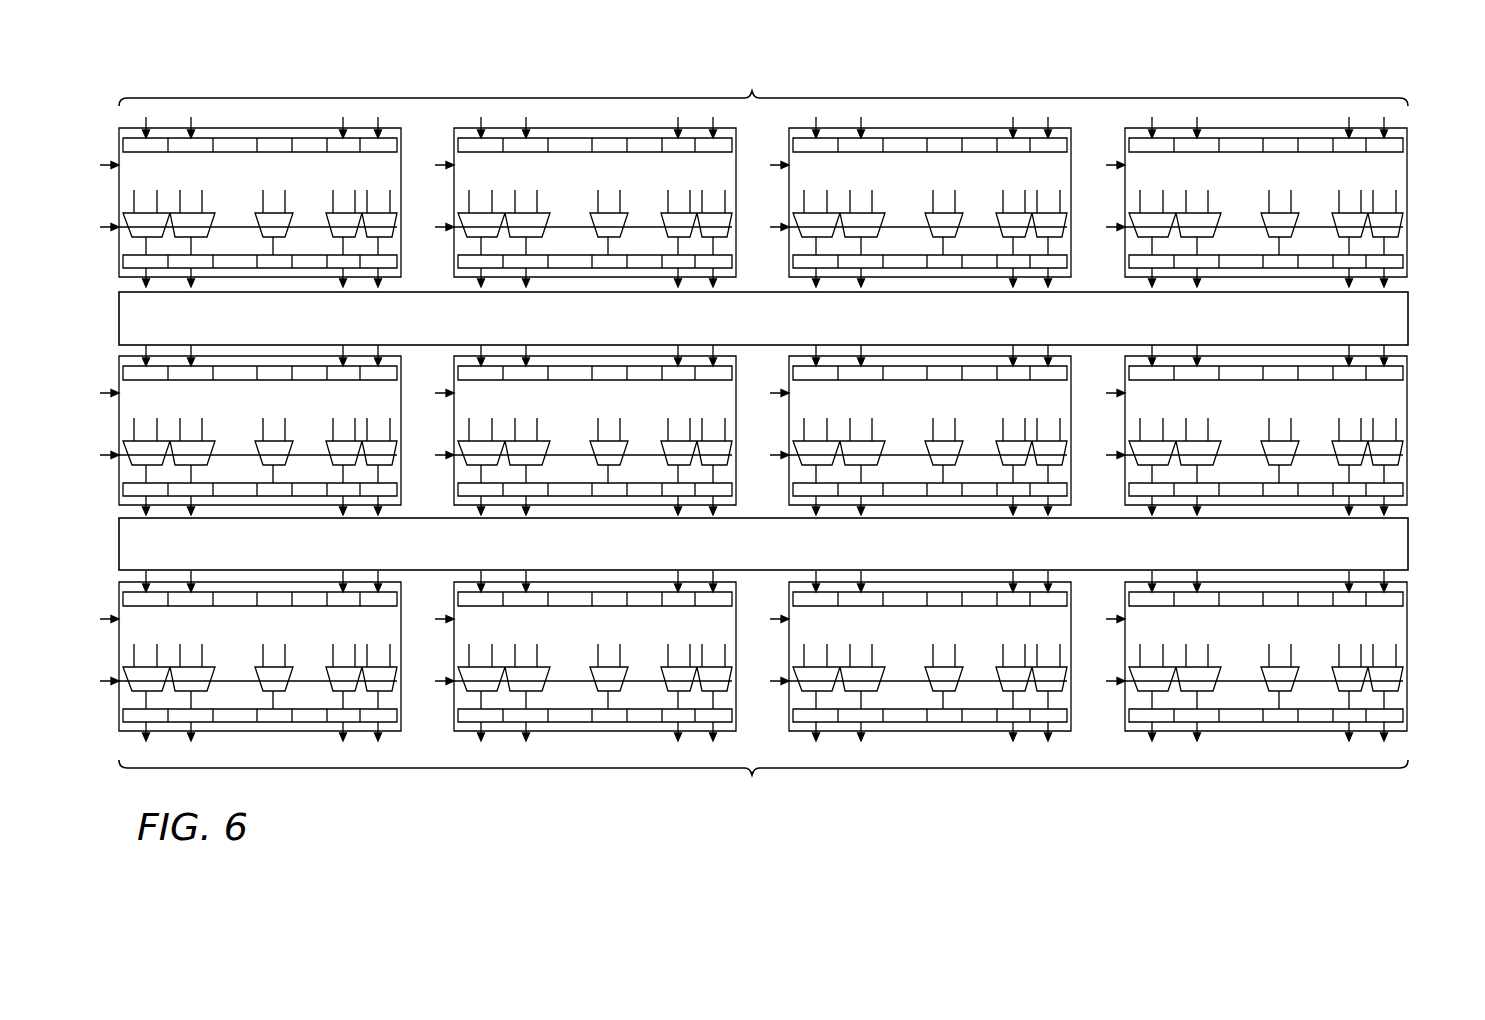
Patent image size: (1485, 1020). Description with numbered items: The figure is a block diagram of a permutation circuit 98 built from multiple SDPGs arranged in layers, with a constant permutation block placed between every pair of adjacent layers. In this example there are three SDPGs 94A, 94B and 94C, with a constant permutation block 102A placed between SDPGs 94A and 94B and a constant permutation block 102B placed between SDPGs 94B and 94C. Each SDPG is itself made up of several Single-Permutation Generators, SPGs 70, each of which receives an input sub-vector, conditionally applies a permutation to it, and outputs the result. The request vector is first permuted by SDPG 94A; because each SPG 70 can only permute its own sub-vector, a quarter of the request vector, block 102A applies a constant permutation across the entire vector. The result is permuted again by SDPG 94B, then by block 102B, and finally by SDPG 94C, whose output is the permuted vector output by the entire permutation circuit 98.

The permutation circuit 98 is at (277, 59).
The Single-Permutation Generator (SPG) 70 is at (401, 151).
The SDPG 94A is at (778, 198).
The SDPG 94B is at (401, 463).
The SDPG 94C is at (401, 712).
The constant permutation block 102A is at (1409, 323).
The constant permutation block 102B is at (1409, 550).